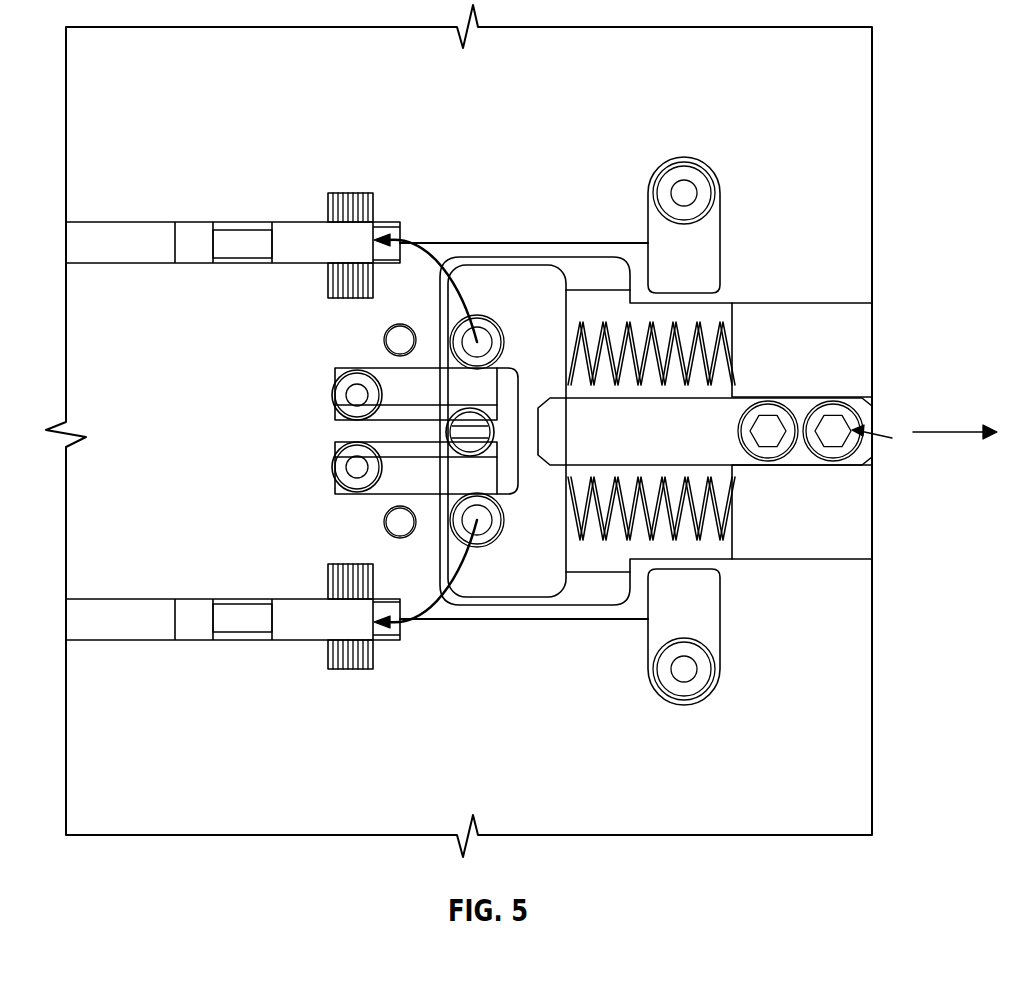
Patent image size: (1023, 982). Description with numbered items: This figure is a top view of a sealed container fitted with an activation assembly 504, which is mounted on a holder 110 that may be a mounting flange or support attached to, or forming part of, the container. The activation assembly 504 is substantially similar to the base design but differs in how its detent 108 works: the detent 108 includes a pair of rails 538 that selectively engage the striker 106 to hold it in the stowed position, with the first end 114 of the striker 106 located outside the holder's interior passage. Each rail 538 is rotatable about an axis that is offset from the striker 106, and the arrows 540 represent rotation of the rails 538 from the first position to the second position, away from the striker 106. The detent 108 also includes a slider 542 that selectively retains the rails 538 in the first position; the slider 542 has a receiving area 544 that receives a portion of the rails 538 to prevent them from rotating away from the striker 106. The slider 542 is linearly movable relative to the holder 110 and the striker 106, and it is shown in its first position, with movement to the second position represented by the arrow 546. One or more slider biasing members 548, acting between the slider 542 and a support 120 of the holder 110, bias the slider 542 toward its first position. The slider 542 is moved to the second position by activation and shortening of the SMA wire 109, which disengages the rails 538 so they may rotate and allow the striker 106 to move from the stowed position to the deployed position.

The activation assembly 504 is at (276, 145).
The arrows 540 is at (432, 254).
The SMA wire 109 is at (552, 243).
The first end 114 is at (470, 408).
The slider biasing members 548 is at (710, 332).
The support 120 is at (773, 337).
The arrow 546 is at (957, 432).
The rails 538 is at (397, 381).
The detent 108 is at (392, 387).
The striker 106 is at (447, 432).
The receiving area 544 is at (553, 570).
The slider 542 is at (507, 450).
The holder 110 is at (857, 700).